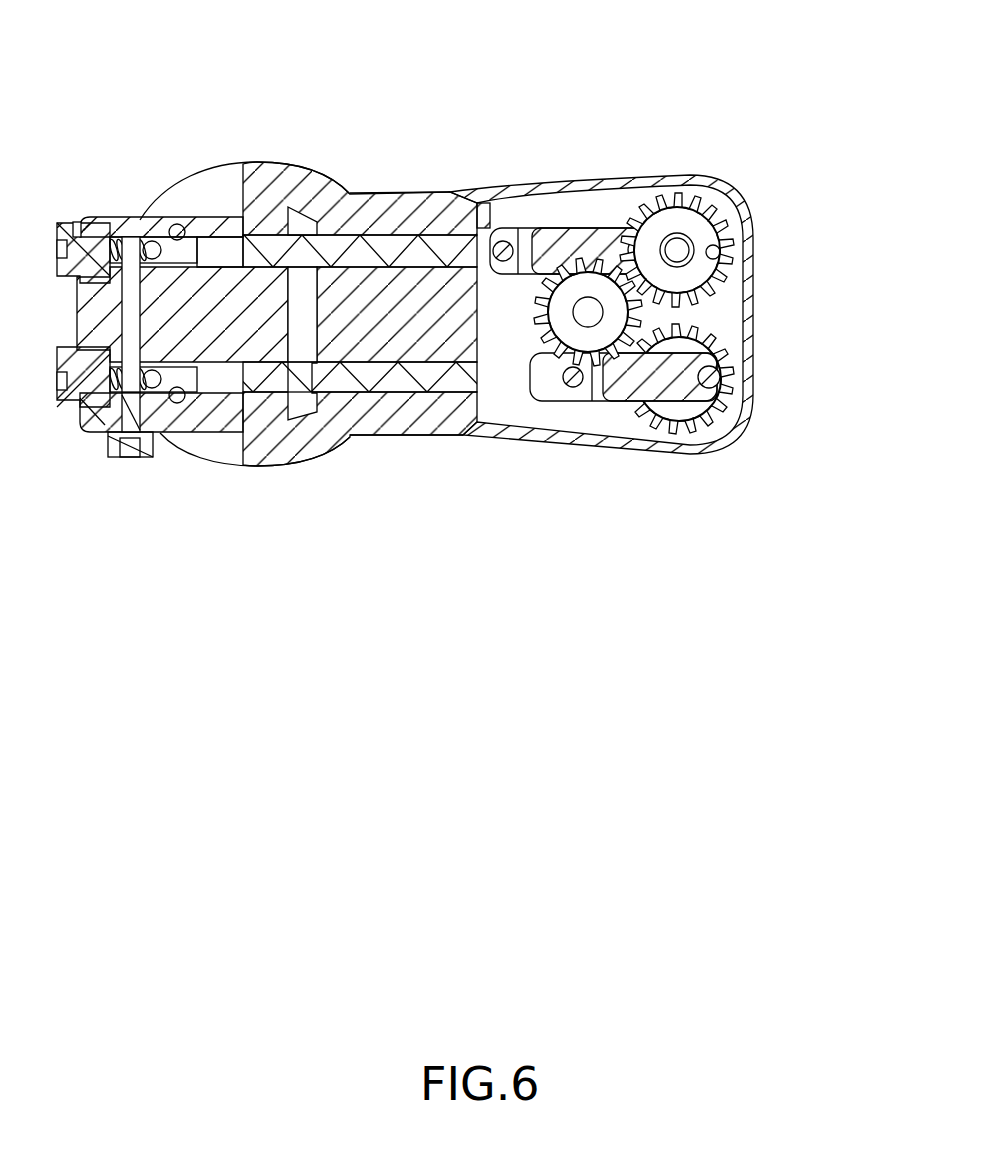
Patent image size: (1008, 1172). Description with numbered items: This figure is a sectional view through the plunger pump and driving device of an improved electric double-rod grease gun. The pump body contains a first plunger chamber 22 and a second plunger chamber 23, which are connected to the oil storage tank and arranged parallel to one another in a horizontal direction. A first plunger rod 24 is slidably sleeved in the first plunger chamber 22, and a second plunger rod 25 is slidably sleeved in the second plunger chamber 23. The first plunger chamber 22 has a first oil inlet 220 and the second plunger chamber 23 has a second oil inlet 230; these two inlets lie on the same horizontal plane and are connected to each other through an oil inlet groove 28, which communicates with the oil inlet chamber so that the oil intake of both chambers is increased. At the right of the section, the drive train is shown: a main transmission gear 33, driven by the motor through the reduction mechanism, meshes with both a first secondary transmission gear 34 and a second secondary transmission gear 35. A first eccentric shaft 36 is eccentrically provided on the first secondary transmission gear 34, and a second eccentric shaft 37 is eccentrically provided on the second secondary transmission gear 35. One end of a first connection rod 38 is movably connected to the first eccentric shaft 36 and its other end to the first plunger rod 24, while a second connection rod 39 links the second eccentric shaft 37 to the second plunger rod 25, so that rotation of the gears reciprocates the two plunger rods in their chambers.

The first plunger chamber 22 is at (228, 393).
The second plunger chamber 23 is at (220, 247).
The first plunger rod 24 is at (450, 373).
The second plunger rod 25 is at (378, 250).
The oil inlet groove 28 is at (307, 318).
The main transmission gear 33 is at (563, 330).
The first secondary transmission gear 34 is at (697, 347).
The second secondary transmission gear 35 is at (700, 225).
The first eccentric shaft 36 is at (730, 388).
The second eccentric shaft 37 is at (645, 225).
The first connection rod 38 is at (662, 383).
The second connection rod 39 is at (577, 250).
The first oil inlet 220 is at (303, 380).
The second oil inlet 230 is at (303, 232).